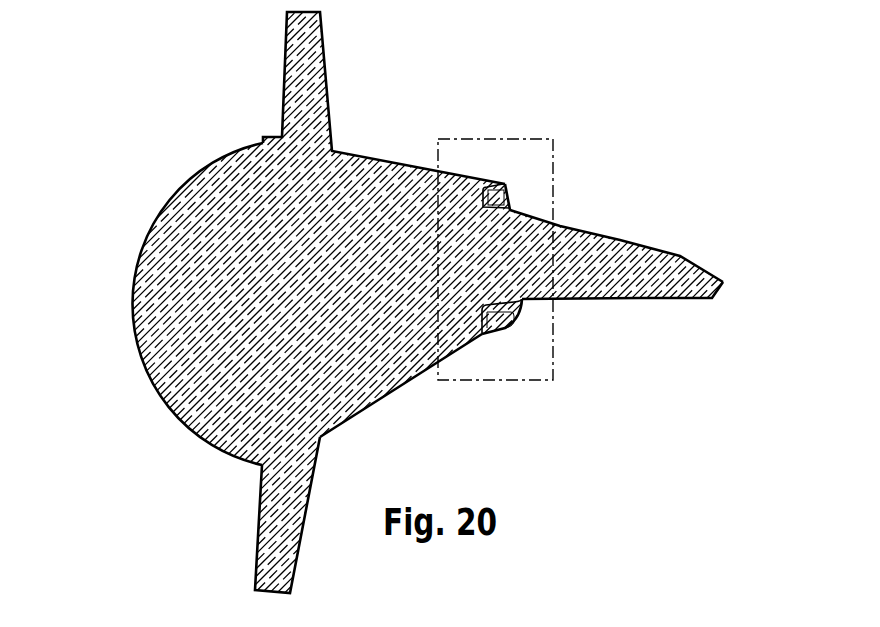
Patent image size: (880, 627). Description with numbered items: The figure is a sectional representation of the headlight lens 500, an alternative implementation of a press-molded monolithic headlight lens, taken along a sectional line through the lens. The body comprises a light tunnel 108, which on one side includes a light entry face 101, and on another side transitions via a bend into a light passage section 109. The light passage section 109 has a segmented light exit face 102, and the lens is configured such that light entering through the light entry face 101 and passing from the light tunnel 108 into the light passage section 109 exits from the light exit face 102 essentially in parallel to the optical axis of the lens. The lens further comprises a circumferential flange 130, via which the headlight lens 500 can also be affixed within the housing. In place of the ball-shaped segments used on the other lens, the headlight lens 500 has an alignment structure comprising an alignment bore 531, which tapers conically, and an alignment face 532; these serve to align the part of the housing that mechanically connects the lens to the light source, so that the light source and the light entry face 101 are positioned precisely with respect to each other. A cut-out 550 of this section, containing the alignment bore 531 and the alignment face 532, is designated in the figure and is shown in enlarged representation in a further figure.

The headlight lens 500 is at (566, 79).
The light exit face 102 is at (124, 301).
The light passage section 109 is at (360, 172).
The circumferential flange 130 is at (275, 538).
The light tunnel 108 is at (607, 241).
The light entry face 101 is at (716, 298).
The alignment bore 531 is at (503, 182).
The alignment face 532 is at (500, 318).
The cut-out 550 is at (553, 152).